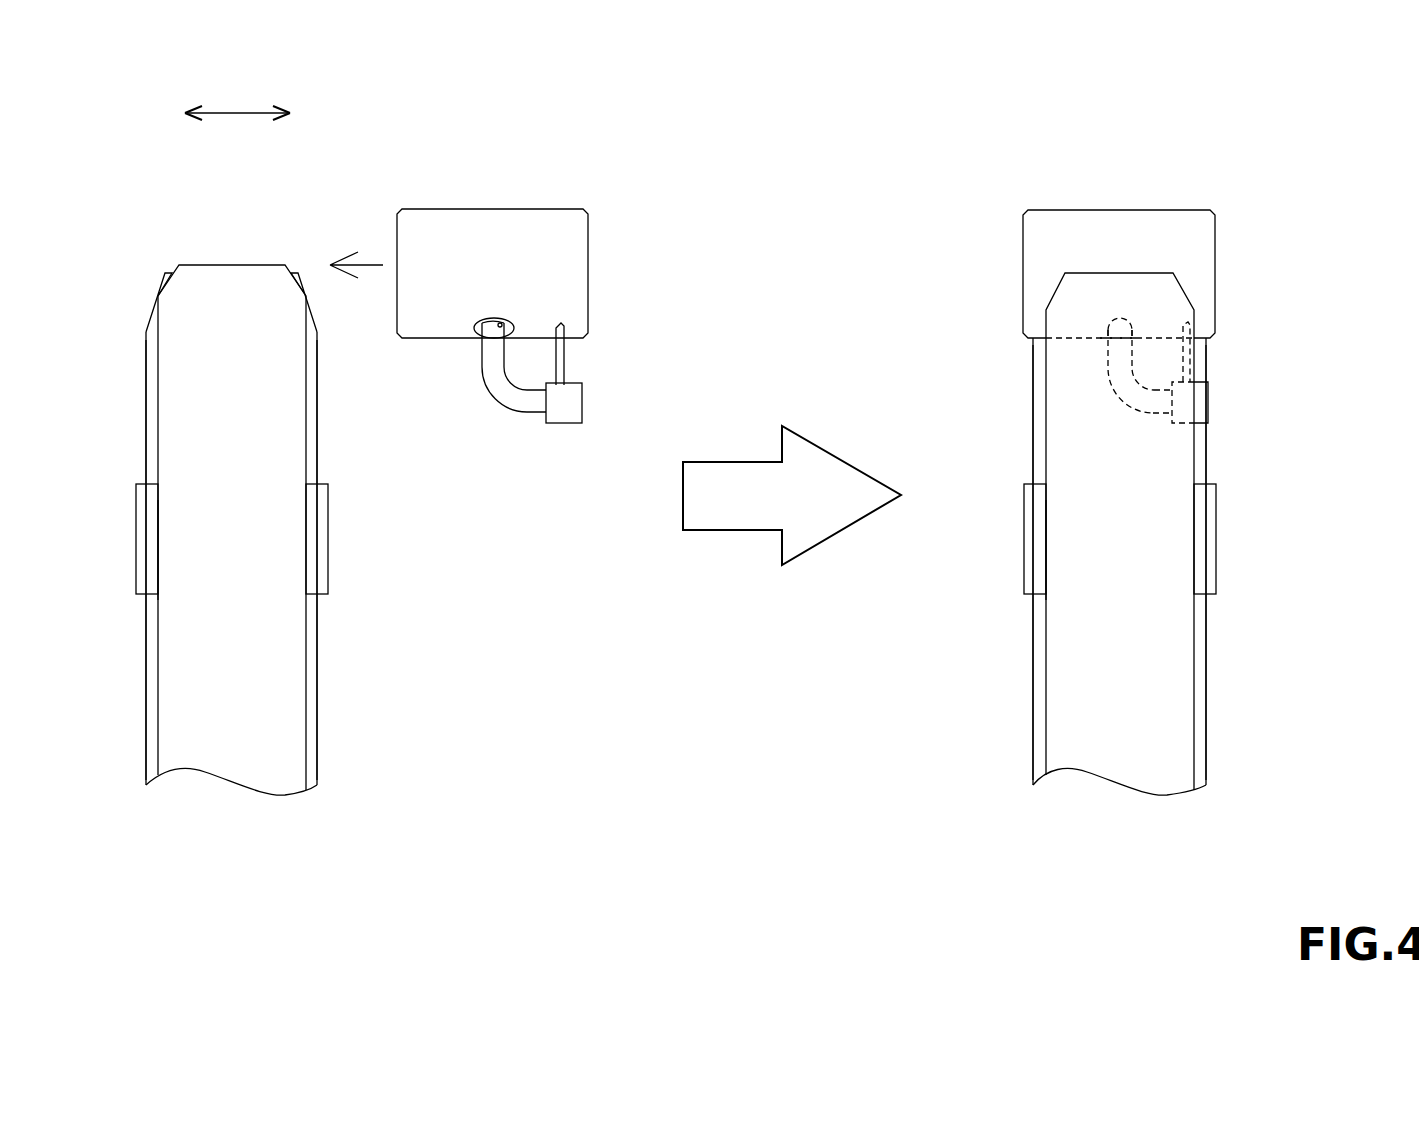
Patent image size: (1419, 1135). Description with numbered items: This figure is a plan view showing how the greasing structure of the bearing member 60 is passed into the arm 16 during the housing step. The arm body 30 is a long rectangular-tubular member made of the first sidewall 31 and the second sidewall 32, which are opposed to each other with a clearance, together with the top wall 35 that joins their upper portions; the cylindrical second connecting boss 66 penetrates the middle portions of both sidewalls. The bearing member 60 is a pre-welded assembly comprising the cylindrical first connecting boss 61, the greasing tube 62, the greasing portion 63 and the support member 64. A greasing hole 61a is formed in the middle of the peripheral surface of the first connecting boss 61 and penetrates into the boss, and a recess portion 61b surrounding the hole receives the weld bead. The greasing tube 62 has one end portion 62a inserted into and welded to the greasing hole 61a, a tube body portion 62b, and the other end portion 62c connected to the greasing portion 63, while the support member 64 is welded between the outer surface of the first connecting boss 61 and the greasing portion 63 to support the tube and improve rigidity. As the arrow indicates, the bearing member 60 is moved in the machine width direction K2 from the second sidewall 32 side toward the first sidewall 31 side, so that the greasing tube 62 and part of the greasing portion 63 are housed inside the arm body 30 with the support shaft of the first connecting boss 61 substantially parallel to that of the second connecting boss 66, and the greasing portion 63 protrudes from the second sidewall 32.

The machine width direction K2 is at (240, 113).
The arm 16 is at (451, 729).
The arm body 30 is at (388, 618).
The first sidewall 31 is at (145, 616).
The second sidewall 32 is at (320, 640).
The top wall 35 is at (236, 280).
The bearing member 60 is at (843, 299).
The first connecting boss 61 is at (588, 256).
The greasing hole 61a is at (508, 325).
The recess portion 61b is at (478, 335).
The greasing tube 62 is at (843, 405).
The one end portion 62a is at (512, 332).
The tube body portion 62b is at (483, 384).
The other end portion 62c is at (533, 415).
The greasing portion 63 is at (565, 425).
The support member 64 is at (567, 362).
The second connecting boss 66 is at (328, 522).